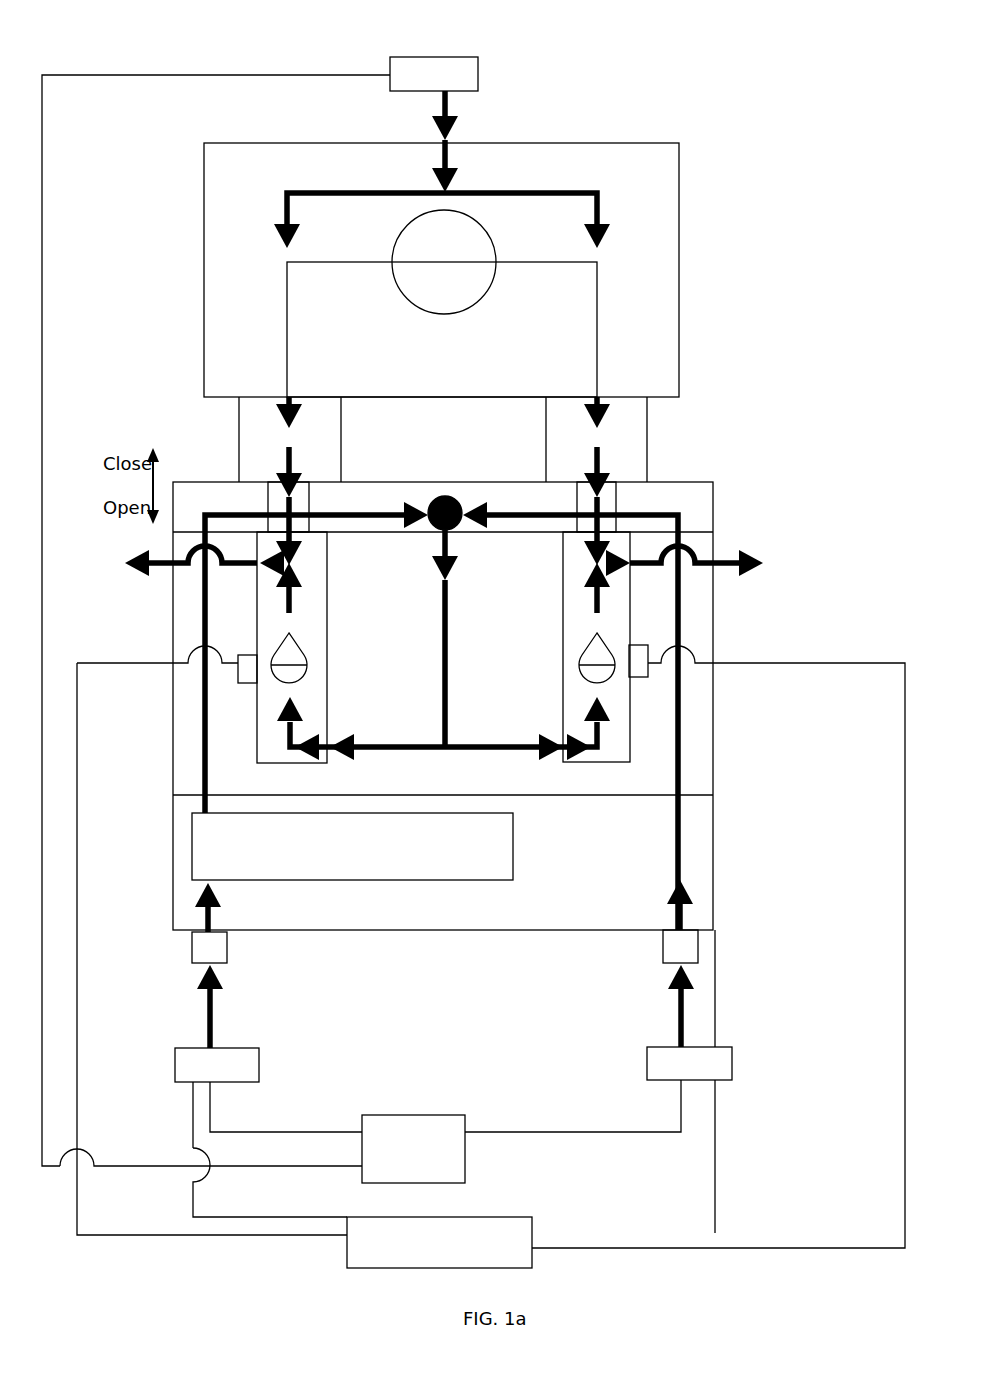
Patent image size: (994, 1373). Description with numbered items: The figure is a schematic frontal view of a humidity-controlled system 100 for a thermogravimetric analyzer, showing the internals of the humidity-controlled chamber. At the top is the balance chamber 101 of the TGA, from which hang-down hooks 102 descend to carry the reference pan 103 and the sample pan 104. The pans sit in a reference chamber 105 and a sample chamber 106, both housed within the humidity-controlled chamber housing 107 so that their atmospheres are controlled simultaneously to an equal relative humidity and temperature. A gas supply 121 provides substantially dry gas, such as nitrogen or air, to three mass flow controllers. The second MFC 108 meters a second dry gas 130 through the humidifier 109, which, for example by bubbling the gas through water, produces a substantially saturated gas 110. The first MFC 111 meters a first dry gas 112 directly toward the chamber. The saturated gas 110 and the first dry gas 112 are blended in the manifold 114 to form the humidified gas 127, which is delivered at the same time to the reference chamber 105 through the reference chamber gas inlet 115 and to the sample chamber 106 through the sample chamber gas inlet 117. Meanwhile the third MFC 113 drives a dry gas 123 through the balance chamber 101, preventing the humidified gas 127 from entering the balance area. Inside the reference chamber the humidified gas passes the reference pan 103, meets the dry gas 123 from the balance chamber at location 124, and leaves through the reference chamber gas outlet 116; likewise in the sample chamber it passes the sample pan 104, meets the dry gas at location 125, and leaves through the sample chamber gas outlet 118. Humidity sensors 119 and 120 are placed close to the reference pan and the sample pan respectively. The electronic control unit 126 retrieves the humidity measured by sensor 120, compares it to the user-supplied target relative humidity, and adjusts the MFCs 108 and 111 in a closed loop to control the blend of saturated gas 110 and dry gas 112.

The humidity-controlled system 100 is at (765, 90).
The balance chamber 101 is at (508, 270).
The hang-down hooks 102 is at (284, 362).
The reference pan 103 is at (265, 658).
The sample pan 104 is at (714, 685).
The reference chamber 105 is at (253, 735).
The sample chamber 106 is at (714, 677).
The humidity-controlled chamber housing 107 is at (492, 666).
The second MFC 108 is at (260, 1065).
The humidifier 109 is at (345, 862).
The substantially saturated gas 110 is at (265, 600).
The first MFC 111 is at (732, 1063).
The first dry gas 112 is at (749, 905).
The third MFC 113 is at (497, 75).
The manifold 114 is at (443, 492).
The reference chamber gas inlet 115 is at (345, 727).
The reference chamber gas outlet 116 is at (255, 568).
The sample chamber gas inlet 117 is at (547, 728).
The sample chamber gas outlet 118 is at (627, 555).
The humidity sensor 119 is at (235, 683).
The humidity sensor 120 is at (720, 631).
The gas supply 121 is at (467, 1148).
The dry gas 123 is at (460, 160).
The location 124 is at (310, 567).
The location 125 is at (577, 565).
The electronic control unit 126 is at (343, 1250).
The humidified gas 127 is at (440, 593).
The second dry gas 130 is at (203, 917).